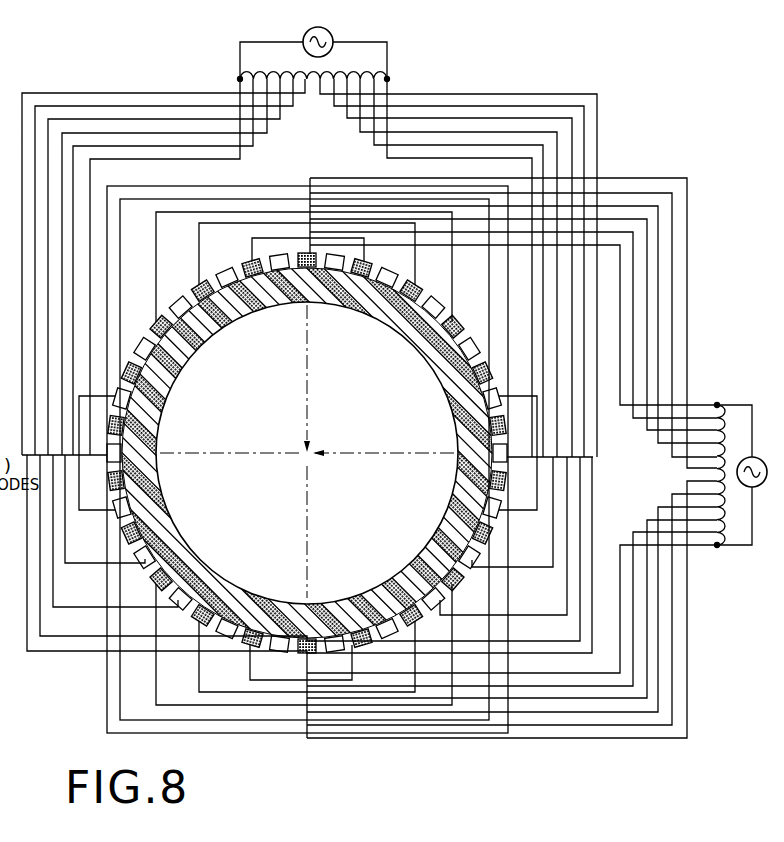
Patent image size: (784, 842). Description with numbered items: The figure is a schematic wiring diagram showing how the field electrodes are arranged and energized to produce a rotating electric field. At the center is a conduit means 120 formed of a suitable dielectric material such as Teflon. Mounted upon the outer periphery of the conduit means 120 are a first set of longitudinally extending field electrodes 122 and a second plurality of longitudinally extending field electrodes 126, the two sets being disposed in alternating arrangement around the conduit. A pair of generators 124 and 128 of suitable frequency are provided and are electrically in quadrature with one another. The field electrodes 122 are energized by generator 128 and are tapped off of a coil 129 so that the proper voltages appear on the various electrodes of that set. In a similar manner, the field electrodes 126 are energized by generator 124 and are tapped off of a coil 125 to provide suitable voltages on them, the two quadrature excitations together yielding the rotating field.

The conduit means 120 is at (203, 348).
The first set of field electrodes 122 is at (399, 330).
The second plurality of field electrodes 126 is at (466, 414).
The generator 128 is at (336, 33).
The coil 129 is at (386, 63).
The generator 124 is at (762, 492).
The coil 125 is at (728, 528).